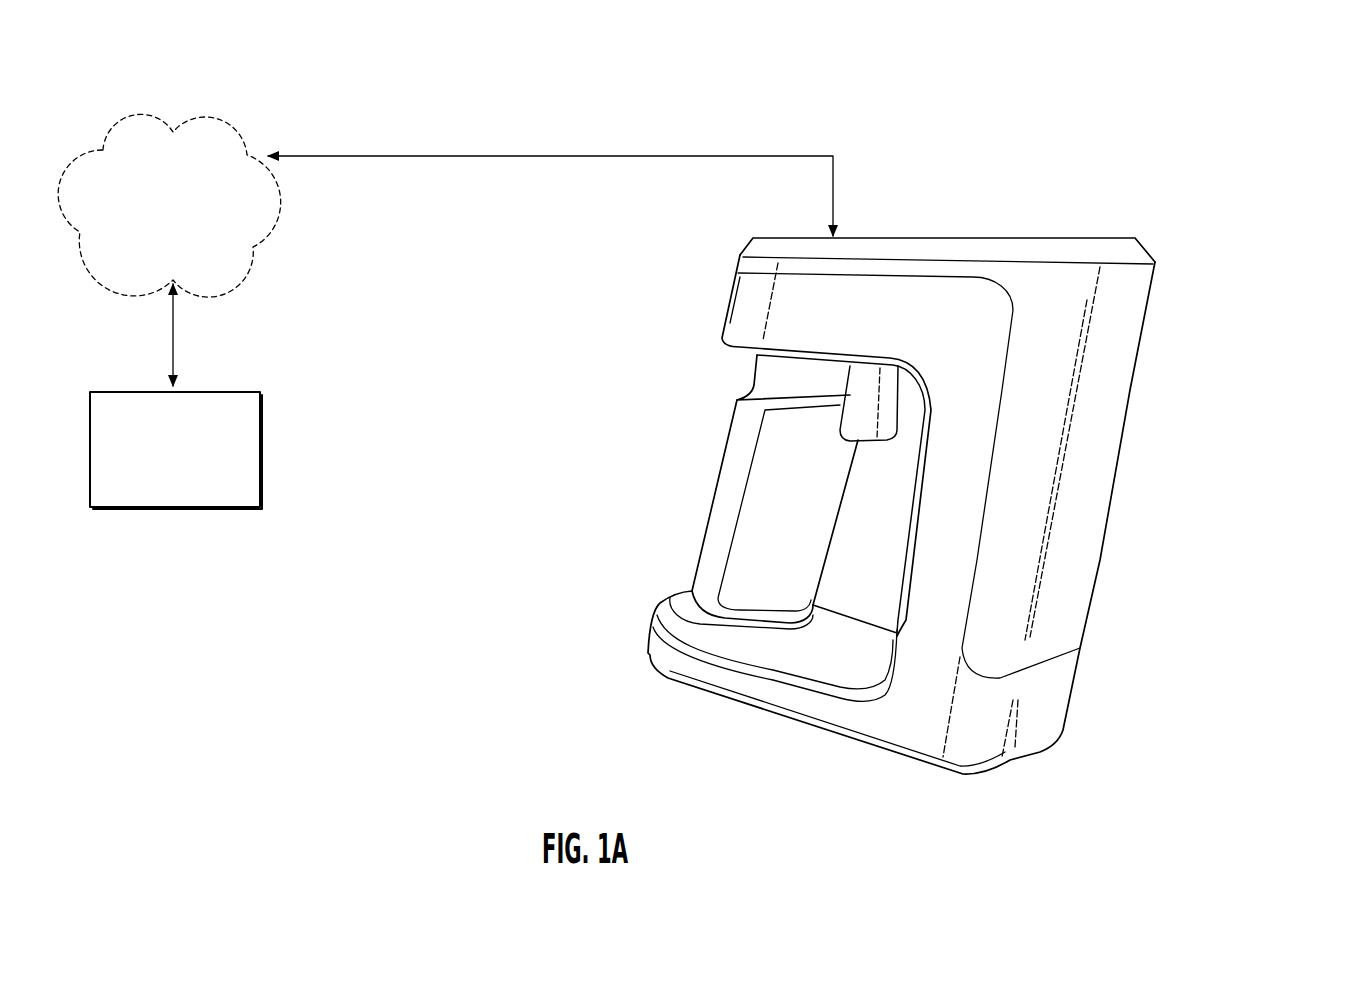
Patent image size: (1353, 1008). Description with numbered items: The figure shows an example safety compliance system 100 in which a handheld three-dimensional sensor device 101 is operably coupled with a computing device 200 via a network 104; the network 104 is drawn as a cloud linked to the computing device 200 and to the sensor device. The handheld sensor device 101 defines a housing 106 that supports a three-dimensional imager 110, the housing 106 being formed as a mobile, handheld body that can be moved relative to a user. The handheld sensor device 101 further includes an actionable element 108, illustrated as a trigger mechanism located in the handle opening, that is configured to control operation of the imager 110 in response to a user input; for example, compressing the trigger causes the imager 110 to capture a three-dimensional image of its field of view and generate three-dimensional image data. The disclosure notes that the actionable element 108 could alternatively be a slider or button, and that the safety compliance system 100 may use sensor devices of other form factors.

The safety compliance system 100 is at (1266, 118).
The handheld 3D sensor device 101 is at (1131, 195).
The network 104 is at (136, 116).
The housing 106 is at (930, 227).
The actionable element 108 is at (877, 450).
The 3D imager 110 is at (1152, 304).
The computing device 200 is at (135, 378).